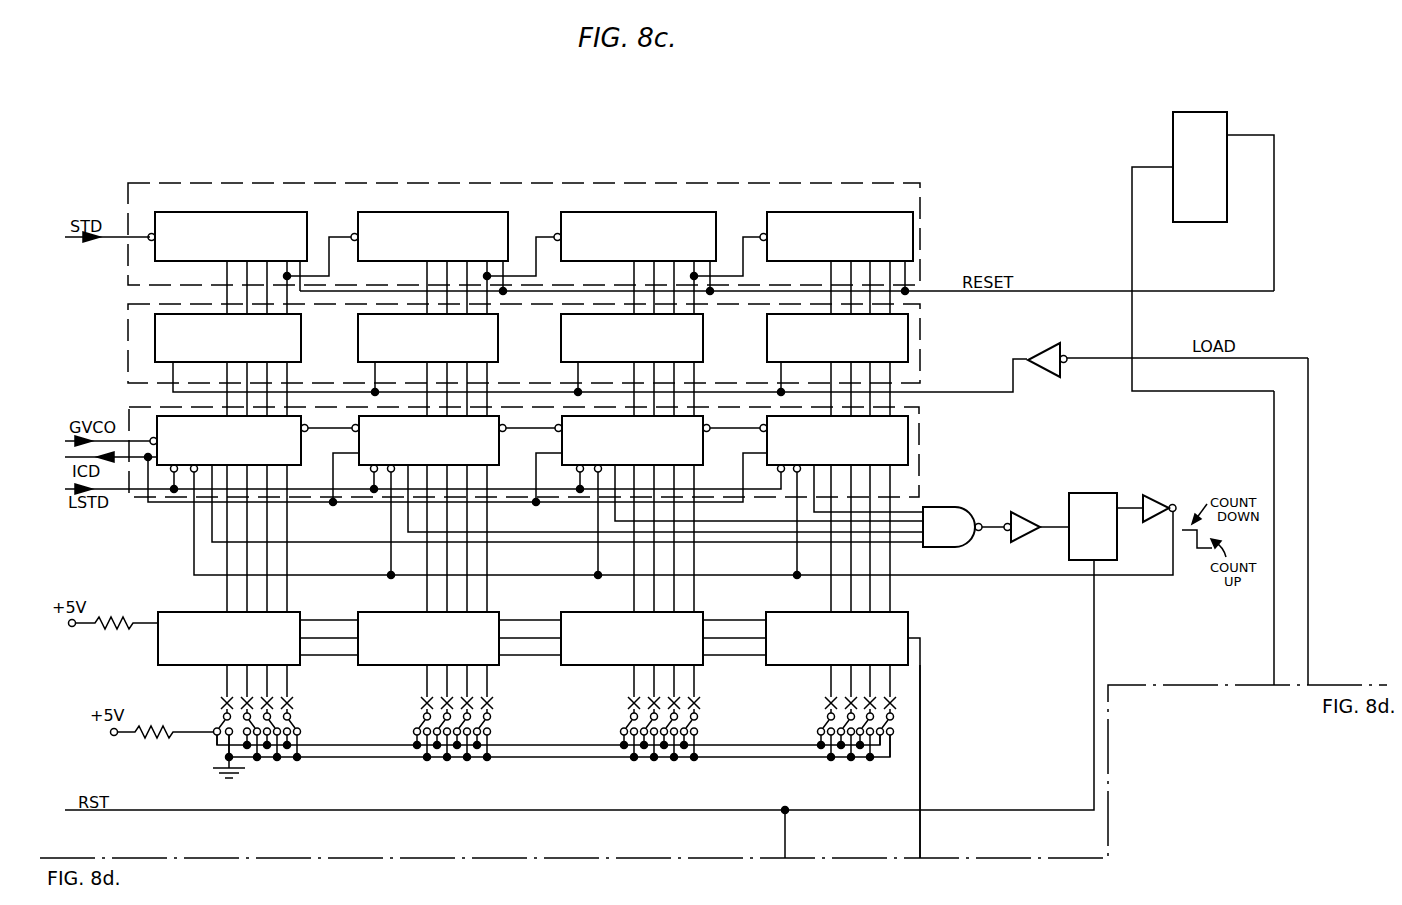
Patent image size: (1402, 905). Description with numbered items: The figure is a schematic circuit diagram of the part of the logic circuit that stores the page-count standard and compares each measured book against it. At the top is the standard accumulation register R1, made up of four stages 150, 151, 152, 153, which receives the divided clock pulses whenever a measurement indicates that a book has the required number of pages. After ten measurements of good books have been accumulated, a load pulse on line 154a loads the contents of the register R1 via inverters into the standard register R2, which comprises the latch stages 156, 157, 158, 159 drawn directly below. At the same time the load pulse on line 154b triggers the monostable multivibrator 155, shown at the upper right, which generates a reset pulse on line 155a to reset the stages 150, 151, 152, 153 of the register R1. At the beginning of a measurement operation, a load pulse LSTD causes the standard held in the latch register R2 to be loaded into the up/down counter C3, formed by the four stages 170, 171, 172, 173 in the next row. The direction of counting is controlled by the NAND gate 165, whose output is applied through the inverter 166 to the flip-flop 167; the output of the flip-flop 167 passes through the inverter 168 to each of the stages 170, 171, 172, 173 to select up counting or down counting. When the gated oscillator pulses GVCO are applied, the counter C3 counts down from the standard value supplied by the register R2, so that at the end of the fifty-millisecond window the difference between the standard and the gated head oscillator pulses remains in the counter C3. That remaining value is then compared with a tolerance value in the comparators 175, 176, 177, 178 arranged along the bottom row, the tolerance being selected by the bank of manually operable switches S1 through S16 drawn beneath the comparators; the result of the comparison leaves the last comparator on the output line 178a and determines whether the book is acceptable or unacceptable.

The stage 150 is at (244, 212).
The stage 151 is at (464, 212).
The stage 152 is at (679, 212).
The stage 153 is at (889, 212).
The line 154a is at (1310, 667).
The line 154b is at (1273, 667).
The monostable multivibrator 155 is at (1173, 128).
The line 155a is at (1275, 246).
The latch stage 156 is at (301, 345).
The latch stage 157 is at (498, 345).
The latch stage 158 is at (703, 345).
The latch stage 159 is at (767, 356).
The NAND gate 165 is at (953, 507).
The inverter 166 is at (1021, 511).
The flip-flop 167 is at (1106, 493).
The inverter 168 is at (1165, 494).
The stage 170 is at (301, 421).
The stage 171 is at (499, 421).
The stage 172 is at (703, 421).
The stage 173 is at (908, 424).
The comparator 175 is at (300, 619).
The comparator 176 is at (499, 619).
The comparator 177 is at (703, 619).
The comparator 178 is at (908, 619).
The comparator output line 178a is at (922, 833).
The standard accumulation register R1 is at (920, 207).
The standard register R2 is at (920, 336).
The up/down counter C3 is at (919, 449).
The manually operable switch S1 is at (221, 714).
The manually operable switch S16 is at (904, 715).